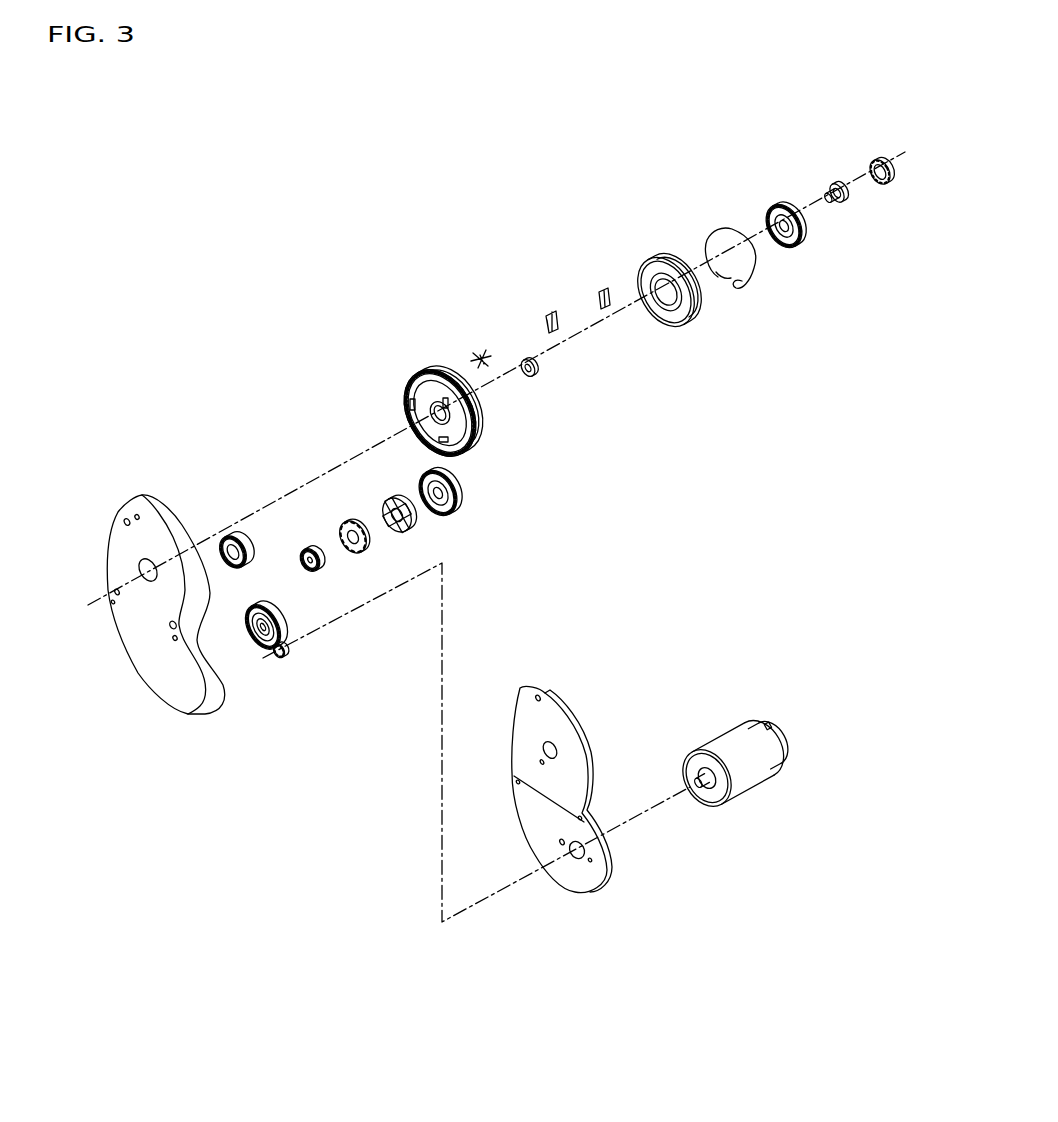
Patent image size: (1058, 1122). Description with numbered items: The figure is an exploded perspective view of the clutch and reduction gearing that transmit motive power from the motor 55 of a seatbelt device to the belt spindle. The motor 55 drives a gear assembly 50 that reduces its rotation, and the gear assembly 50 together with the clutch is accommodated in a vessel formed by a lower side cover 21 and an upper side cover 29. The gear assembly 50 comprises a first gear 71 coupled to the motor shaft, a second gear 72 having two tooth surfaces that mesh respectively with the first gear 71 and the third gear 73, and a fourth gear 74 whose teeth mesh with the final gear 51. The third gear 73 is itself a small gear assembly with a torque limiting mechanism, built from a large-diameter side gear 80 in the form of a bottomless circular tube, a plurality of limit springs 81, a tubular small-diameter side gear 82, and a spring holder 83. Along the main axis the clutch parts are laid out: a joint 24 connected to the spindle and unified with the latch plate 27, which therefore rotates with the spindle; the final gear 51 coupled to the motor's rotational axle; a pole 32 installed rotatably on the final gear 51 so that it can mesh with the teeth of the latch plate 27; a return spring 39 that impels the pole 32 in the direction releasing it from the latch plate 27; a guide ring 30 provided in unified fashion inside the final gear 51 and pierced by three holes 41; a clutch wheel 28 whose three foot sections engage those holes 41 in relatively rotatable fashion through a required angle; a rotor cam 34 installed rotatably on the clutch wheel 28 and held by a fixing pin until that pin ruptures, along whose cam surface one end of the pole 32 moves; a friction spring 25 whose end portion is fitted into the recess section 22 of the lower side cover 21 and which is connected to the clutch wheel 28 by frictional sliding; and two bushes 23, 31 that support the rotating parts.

The lower side cover 21 is at (575, 789).
The recess section 22 is at (556, 770).
The bush 23 is at (878, 162).
The joint 24 is at (837, 183).
The friction spring 25 is at (722, 228).
The latch plate 27 is at (778, 200).
The clutch wheel 28 is at (665, 255).
The upper side cover 29 is at (164, 518).
The guide ring 30 is at (460, 378).
The bush 31 is at (525, 360).
The pole 32 is at (552, 308).
The rotor cam 34 is at (605, 290).
The return spring 39 is at (482, 352).
The holes 41 is at (403, 404).
The gear assembly 50 is at (473, 481).
The final gear 51 is at (482, 418).
The motor 55 is at (720, 743).
The first gear 71 is at (282, 660).
The second gear 72 is at (260, 648).
The third gear 73 is at (358, 392).
The fourth gear 74 is at (228, 537).
The large-diameter side gear 80 is at (425, 472).
The limit springs 81 is at (387, 500).
The small-diameter side gear 82 is at (305, 550).
The spring holder 83 is at (350, 522).